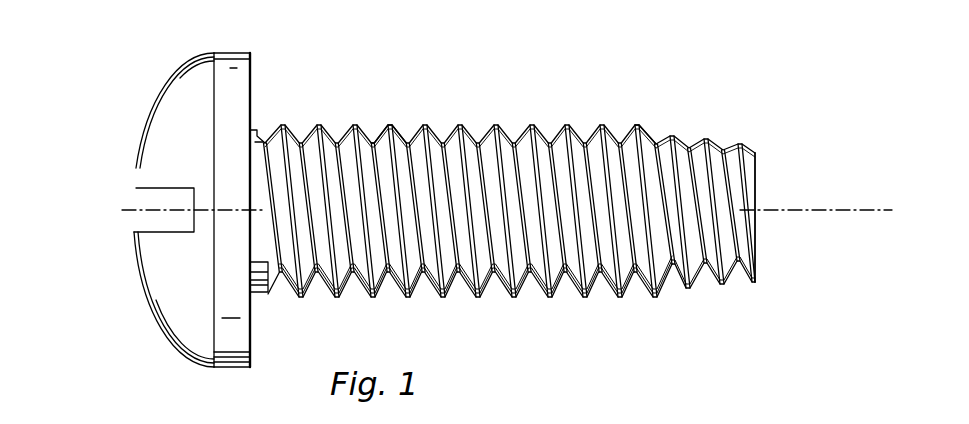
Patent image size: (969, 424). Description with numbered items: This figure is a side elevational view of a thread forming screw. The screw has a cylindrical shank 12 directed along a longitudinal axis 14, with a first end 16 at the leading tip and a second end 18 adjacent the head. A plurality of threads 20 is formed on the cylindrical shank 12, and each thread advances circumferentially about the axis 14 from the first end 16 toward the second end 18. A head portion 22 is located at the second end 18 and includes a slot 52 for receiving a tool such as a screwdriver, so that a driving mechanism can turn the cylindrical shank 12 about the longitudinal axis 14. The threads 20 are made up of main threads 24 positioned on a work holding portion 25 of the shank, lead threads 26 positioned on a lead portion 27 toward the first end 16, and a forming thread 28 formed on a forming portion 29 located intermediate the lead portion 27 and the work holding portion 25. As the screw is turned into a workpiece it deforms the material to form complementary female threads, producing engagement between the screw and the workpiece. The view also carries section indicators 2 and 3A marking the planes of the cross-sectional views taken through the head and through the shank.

The section line 2- 2 is at (65, 207).
The section line 3A- 3A is at (673, 18).
The cylindrical shank 12 is at (264, 292).
The longitudinal axis 14 is at (857, 211).
The first end 16 is at (757, 172).
The second end 18 is at (258, 131).
The threads 20 is at (472, 78).
The head portion 22 is at (166, 210).
The main threads 24 is at (468, 215).
The work holding portion 25 is at (377, 142).
The lead threads 26 is at (737, 216).
The lead portion 27 is at (748, 151).
The forming thread 28 is at (658, 153).
The forming portion 29 is at (675, 137).
The slot 52 is at (152, 229).